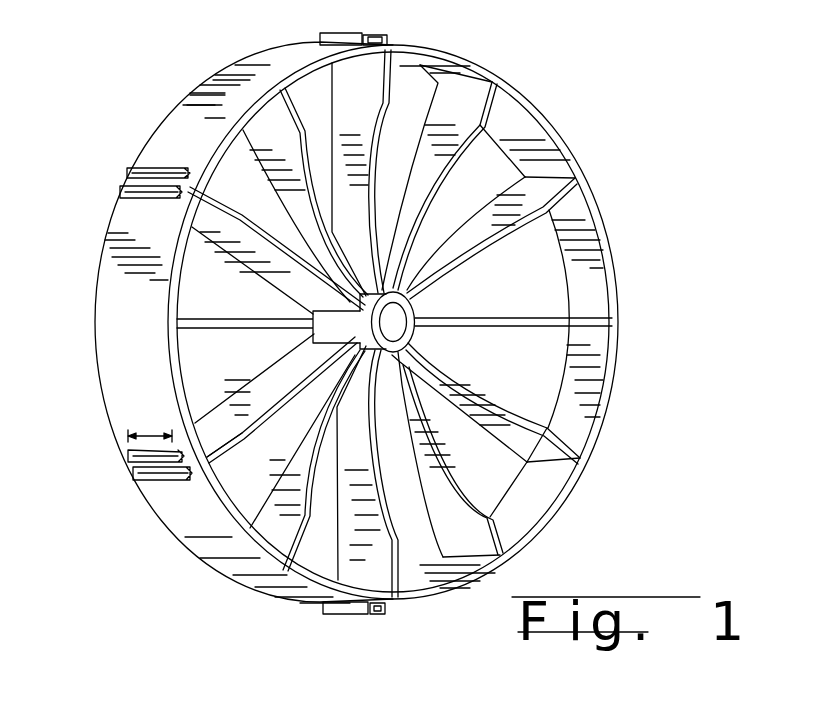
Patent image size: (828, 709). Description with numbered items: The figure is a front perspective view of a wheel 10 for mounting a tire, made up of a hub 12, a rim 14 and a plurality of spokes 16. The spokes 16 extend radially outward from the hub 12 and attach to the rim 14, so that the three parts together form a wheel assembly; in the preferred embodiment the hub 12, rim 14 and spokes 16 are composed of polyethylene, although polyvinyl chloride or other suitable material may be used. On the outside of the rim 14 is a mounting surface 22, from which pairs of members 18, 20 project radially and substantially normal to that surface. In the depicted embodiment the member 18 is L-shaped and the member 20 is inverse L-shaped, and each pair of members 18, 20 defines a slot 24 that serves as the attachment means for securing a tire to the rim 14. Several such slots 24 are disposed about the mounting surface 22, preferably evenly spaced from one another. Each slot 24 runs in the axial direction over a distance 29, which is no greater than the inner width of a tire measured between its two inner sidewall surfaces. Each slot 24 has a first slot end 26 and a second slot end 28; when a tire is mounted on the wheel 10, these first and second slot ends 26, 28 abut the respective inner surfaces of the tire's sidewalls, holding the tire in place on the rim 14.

The wheel 10 is at (261, 596).
The hub 12 is at (419, 334).
The rim 14 is at (146, 320).
The spokes 16 is at (470, 100).
The L-shaped member 18 is at (383, 33).
The inverse L-shaped member 20 is at (357, 31).
The mounting surface 22 is at (172, 330).
The slot 24 is at (197, 182).
The first slot end 26 is at (127, 472).
The second slot end 28 is at (236, 466).
The distance 29 is at (148, 432).